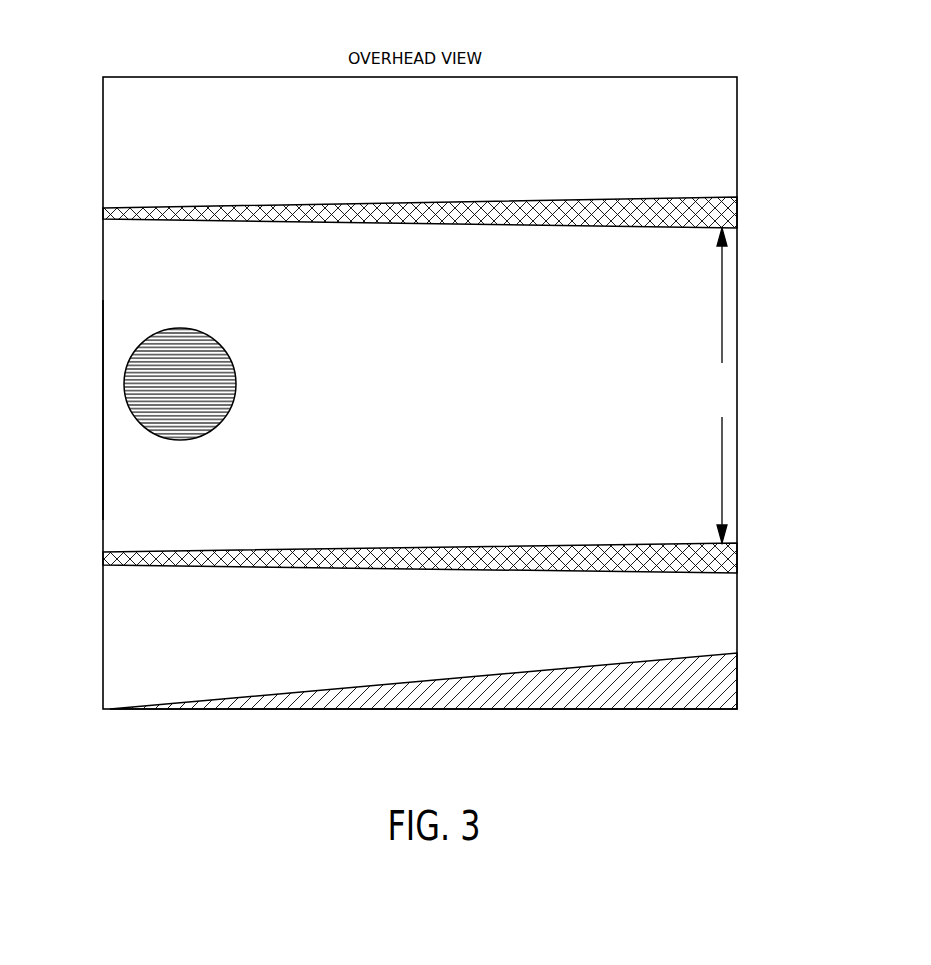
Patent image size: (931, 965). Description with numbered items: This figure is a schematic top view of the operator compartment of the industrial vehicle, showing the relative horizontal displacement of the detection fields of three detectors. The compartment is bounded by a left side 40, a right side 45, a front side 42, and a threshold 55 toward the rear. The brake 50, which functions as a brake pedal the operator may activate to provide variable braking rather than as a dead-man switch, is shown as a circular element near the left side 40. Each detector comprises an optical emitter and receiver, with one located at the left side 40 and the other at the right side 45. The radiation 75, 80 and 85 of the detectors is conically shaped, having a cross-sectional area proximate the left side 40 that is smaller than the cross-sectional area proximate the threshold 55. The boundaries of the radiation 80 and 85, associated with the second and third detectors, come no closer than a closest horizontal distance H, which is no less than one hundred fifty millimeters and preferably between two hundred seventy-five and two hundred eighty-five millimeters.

The left side 40 is at (103, 466).
The front side 42 is at (232, 77).
The right side 45 is at (738, 400).
The brake 50 is at (112, 372).
The threshold 55 is at (607, 710).
The radiation 75 is at (118, 697).
The radiation 80 is at (112, 543).
The radiation 85 is at (112, 198).